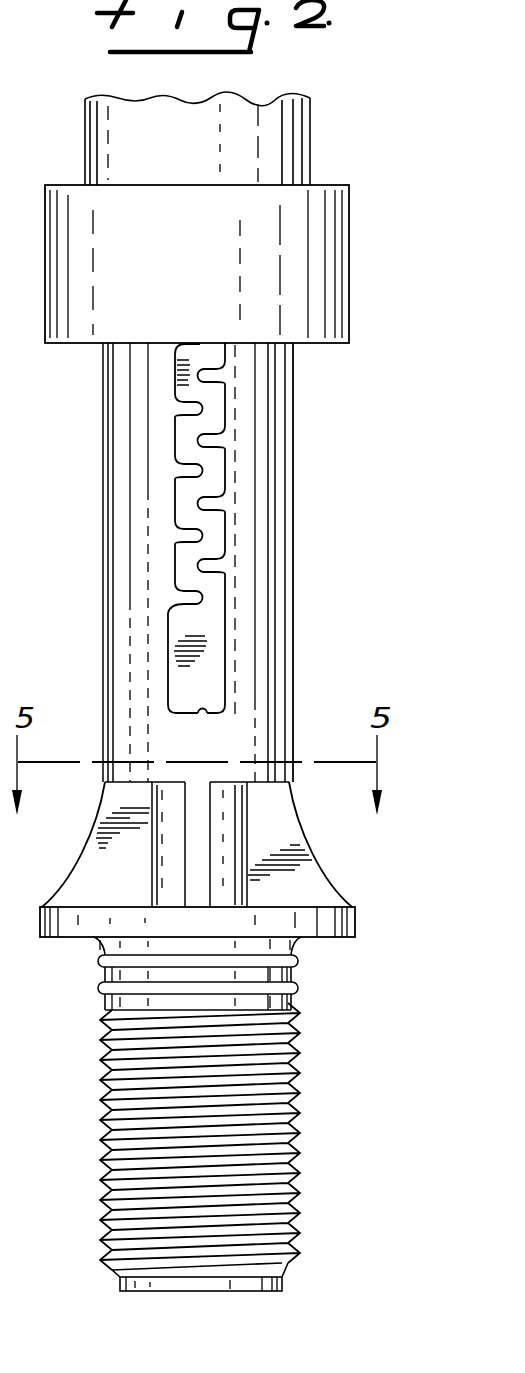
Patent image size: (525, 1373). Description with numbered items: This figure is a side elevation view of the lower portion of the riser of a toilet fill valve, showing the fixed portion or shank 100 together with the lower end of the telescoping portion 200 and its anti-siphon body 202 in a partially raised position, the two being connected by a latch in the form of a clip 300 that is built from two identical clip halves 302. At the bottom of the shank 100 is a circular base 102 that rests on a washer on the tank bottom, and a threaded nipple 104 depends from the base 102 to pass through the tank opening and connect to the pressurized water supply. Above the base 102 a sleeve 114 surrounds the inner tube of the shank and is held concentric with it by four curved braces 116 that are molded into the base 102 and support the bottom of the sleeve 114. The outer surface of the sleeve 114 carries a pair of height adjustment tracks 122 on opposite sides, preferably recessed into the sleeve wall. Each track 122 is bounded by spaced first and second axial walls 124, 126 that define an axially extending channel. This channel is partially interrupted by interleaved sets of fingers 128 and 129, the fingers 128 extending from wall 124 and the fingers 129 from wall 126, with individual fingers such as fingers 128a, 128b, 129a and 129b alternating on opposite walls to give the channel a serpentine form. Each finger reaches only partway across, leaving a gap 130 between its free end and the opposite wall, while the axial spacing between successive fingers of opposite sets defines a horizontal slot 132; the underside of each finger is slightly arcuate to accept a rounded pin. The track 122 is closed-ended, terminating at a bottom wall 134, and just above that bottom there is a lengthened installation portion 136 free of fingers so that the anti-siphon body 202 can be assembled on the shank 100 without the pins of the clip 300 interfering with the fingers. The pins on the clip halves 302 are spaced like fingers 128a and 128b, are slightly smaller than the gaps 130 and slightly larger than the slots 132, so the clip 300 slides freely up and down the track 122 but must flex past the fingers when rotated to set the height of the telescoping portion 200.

The shank 100 is at (304, 657).
The circular base 102 is at (338, 938).
The threaded nipple 104 is at (108, 1145).
The sleeve 114 is at (295, 437).
The curved braces 116 is at (193, 843).
The height adjustment tracks 122 is at (168, 441).
The first axial wall 124 is at (175, 497).
The second axial wall 126 is at (226, 478).
The fingers 128 is at (188, 410).
The finger 128a is at (183, 603).
The finger 128b is at (182, 535).
The fingers 129 is at (210, 374).
The finger 129a is at (212, 566).
The finger 129b is at (212, 503).
The gap 130 is at (175, 570).
The horizontal slot 132 is at (226, 548).
The bottom wall 134 is at (207, 713).
The installation portion 136 is at (174, 670).
The telescoping portion 200 is at (320, 109).
The anti-siphon body 202 is at (114, 100).
The clip 300 is at (42, 342).
The clip halves 302 is at (347, 203).